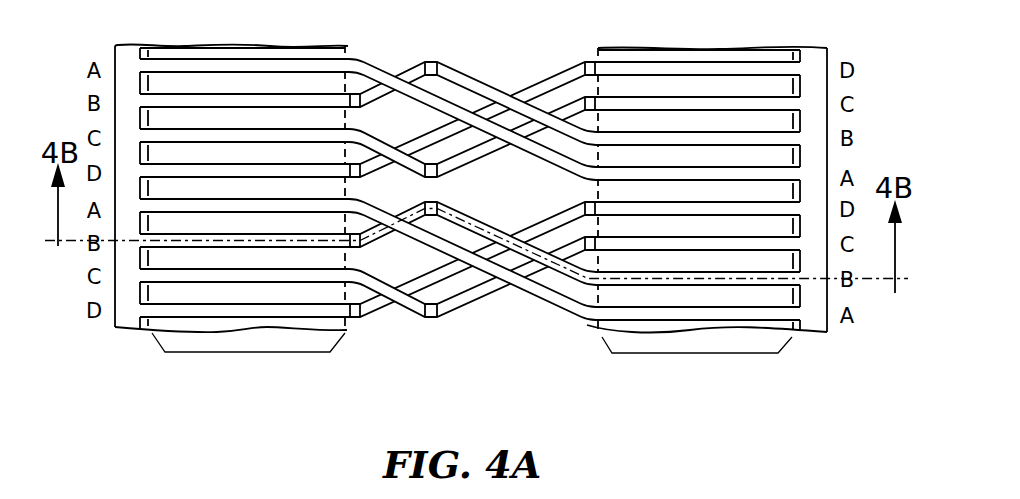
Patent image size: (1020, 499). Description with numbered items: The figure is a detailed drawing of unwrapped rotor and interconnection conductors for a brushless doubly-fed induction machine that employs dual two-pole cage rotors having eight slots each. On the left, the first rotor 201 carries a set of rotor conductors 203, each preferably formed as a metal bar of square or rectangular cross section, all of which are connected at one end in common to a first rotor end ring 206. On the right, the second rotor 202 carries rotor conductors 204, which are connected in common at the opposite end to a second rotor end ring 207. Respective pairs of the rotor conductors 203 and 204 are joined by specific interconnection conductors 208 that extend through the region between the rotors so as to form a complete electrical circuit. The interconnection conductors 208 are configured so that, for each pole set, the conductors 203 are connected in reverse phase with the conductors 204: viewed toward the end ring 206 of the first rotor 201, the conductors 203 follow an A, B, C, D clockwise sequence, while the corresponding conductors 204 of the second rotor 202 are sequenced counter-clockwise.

The first rotor 201 is at (247, 352).
The second rotor 202 is at (690, 353).
The rotor conductors 203 is at (238, 67).
The rotor conductors 204 is at (653, 69).
The first rotor end ring 206 is at (124, 315).
The second rotor end ring 207 is at (810, 322).
The interconnection conductors 208 is at (465, 78).